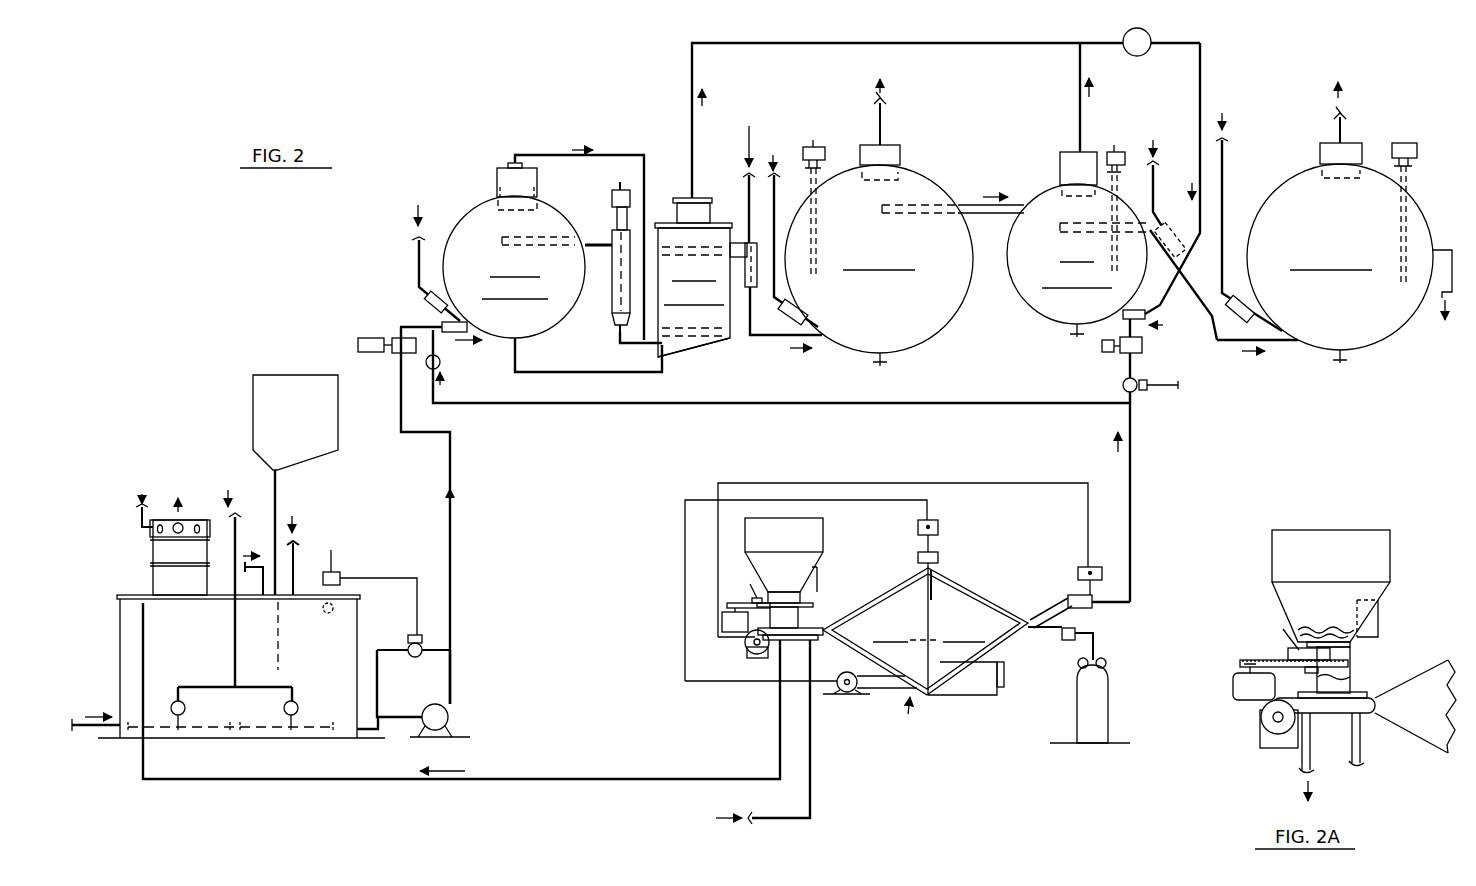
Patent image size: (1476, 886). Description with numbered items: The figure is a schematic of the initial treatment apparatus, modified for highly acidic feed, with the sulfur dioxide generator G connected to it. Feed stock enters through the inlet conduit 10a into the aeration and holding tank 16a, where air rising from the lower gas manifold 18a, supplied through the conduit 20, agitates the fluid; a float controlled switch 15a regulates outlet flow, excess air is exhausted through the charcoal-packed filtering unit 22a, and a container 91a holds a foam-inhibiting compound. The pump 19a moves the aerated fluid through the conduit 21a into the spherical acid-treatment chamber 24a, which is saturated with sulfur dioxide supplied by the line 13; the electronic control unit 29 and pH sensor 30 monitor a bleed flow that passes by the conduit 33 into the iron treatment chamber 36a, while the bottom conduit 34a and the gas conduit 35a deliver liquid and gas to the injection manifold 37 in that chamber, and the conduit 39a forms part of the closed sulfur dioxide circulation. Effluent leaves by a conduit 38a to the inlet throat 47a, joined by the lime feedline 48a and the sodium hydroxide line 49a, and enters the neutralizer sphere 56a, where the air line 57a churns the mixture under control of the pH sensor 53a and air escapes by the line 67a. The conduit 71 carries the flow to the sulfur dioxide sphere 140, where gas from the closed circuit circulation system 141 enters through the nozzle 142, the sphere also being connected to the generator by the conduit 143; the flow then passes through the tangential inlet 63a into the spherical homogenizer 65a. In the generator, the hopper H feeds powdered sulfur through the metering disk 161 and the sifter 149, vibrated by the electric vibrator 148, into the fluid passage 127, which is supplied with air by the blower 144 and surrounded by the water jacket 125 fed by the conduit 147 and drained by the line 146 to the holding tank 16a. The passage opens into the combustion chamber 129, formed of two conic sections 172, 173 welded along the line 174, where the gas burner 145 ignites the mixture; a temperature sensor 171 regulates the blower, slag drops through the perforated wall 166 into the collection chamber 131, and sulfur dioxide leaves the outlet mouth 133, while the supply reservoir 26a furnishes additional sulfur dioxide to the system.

In FIG. 2, the inlet conduit 10a is at (86, 730).
In FIG. 2, the line 13 is at (914, 406).
In FIG. 2, the float controlled switch 15a is at (332, 566).
In FIG. 2, the aeration and holding tank 16a is at (128, 637).
In FIG. 2, the gas manifold 18a is at (211, 684).
In FIG. 2, the pump 19a is at (449, 713).
In FIG. 2, the conduit 20 is at (237, 527).
In FIG. 2, the conduit 21a is at (452, 540).
In FIG. 2, the charcoal-packed filtering unit 22a is at (160, 557).
In FIG. 2, the acid-treatment chamber 24a is at (528, 318).
In FIG. 2, the electronic control unit 29 is at (612, 198).
In FIG. 2, the pH sensor 30 is at (611, 290).
In FIG. 2, the conduit 33 is at (618, 340).
In FIG. 2, the bottom conduit 34a is at (560, 373).
In FIG. 2, the conduit 35a is at (533, 153).
In FIG. 2, the iron treatment chamber 36a is at (724, 222).
In FIG. 2, the injection manifold 37 is at (700, 338).
In FIG. 2, the conduit 38a is at (757, 290).
In FIG. 2, the conduit 39a is at (688, 73).
In FIG. 2, the inlet throat 47a is at (786, 341).
In FIG. 2, the feedline 48a is at (1183, 281).
In FIG. 2, the line 49a is at (745, 176).
In FIG. 2, the pH sensor 53a is at (820, 150).
In FIG. 2, the neutralizer sphere 56a is at (920, 320).
In FIG. 2, the air line 57a is at (780, 222).
In FIG. 2, the tangential inlet 63a is at (1275, 335).
In FIG. 2, the homogenizer 65a is at (1362, 328).
In FIG. 2, the line 67a is at (884, 122).
In FIG. 2, the conduit 71 is at (993, 214).
In FIG. 2, the decolor and defoam compound hopper 91a is at (338, 413).
In FIG. 2, the water jacket 125 is at (808, 626).
In FIG. 2A, the water jacket 125 is at (1367, 692).
In FIG. 2, the fluid passage 127 is at (797, 642).
In FIG. 2A, the fluid passage 127 is at (1350, 711).
In FIG. 2, the combustion chamber 129 is at (945, 582).
In FIG. 2A, the combustion chamber 129 is at (1434, 736).
In FIG. 2, the collection chamber 131 is at (978, 680).
In FIG. 2, the outlet mouth 133 is at (1062, 600).
In FIG. 2, the sulfur dioxide sphere 140 is at (1063, 311).
In FIG. 2, the closed circuit SO2 circulation system 141 is at (1198, 58).
In FIG. 2, the nozzle 142 is at (1144, 322).
In FIG. 2, the conduit 143 is at (1128, 484).
In FIG. 2, the air blower 144 is at (748, 646).
In FIG. 2A, the air blower 144 is at (1263, 745).
In FIG. 2, the gas burner 145 is at (847, 696).
In FIG. 2, the line 146 is at (616, 768).
In FIG. 2A, the line 146 is at (1300, 758).
In FIG. 2, the conduit 147 is at (813, 762).
In FIG. 2A, the conduit 147 is at (1351, 758).
In FIG. 2, the electric vibrator 148 is at (810, 590).
In FIG. 2A, the electric vibrator 148 is at (1376, 626).
In FIG. 2, the sifter 149 is at (791, 596).
In FIG. 2A, the sifter 149 is at (1329, 634).
In FIG. 2, the apertured metering disk 161 is at (750, 603).
In FIG. 2A, the apertured metering disk 161 is at (1271, 659).
In FIG. 2, the perforated wall 166 is at (978, 665).
In FIG. 2, the temperature sensor 171 is at (925, 588).
In FIG. 2, the conic section 172 is at (868, 582).
In FIG. 2A, the conic section 172 is at (1413, 682).
In FIG. 2, the conic section 173 is at (981, 589).
In FIG. 2, the line 174 is at (944, 695).
In FIG. 2, the supply reservoir 26a is at (1082, 690).